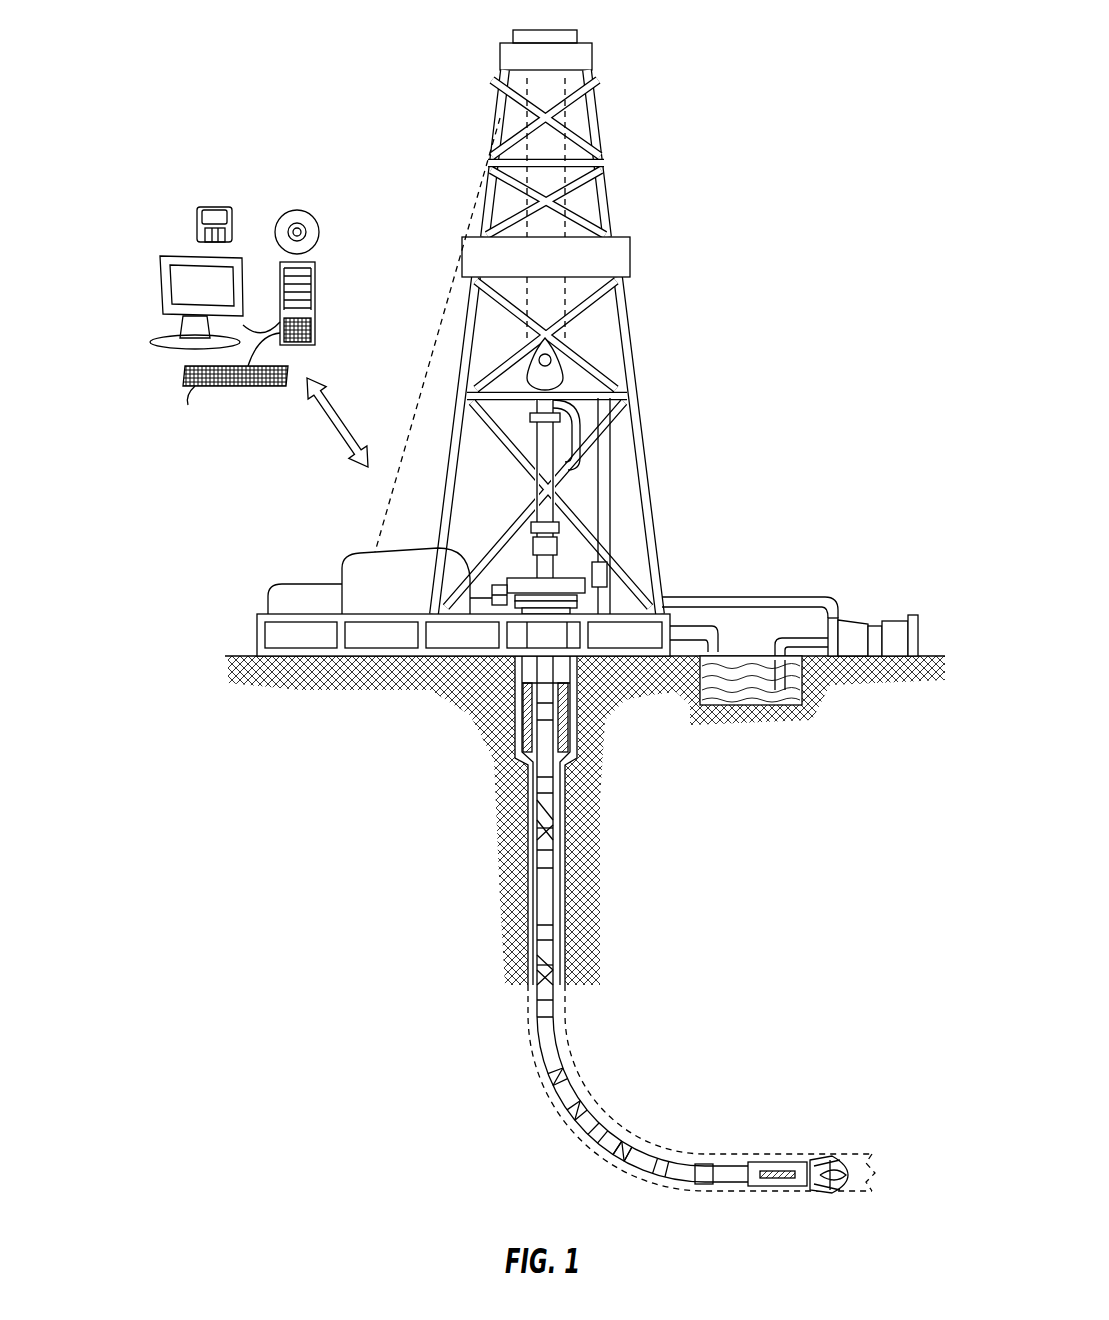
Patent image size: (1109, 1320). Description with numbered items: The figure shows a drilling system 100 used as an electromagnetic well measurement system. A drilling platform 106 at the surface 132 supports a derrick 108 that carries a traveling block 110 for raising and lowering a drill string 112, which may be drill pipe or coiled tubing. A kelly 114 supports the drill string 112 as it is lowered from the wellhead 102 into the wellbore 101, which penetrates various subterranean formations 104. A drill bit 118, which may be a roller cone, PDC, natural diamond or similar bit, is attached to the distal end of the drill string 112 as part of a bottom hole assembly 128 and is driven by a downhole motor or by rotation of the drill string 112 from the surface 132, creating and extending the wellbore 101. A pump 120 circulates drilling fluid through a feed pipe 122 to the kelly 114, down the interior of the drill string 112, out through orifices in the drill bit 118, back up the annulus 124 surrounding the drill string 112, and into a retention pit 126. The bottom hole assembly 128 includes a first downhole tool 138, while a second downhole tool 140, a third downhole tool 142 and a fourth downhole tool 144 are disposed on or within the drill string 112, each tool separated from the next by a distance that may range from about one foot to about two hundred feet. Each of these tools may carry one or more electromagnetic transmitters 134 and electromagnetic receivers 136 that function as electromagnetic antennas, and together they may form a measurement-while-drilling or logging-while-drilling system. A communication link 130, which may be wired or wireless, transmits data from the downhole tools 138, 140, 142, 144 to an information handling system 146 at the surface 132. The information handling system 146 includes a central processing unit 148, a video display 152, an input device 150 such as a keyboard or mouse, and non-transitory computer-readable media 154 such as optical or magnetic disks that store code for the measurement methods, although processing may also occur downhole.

The drilling system 100 is at (852, 135).
The wellbore 101 is at (572, 1012).
The wellhead 102 is at (584, 603).
The subterranean formations 104 is at (781, 944).
The drilling platform 106 is at (257, 640).
The derrick 108 is at (605, 180).
The traveling block 110 is at (565, 365).
The drill string 112 is at (560, 840).
The kelly 114 is at (548, 440).
The drill bit 118 is at (838, 1160).
The pump 120 is at (848, 615).
The feed pipe 122 is at (778, 597).
The annulus 124 is at (532, 855).
The retention pit 126 is at (745, 690).
The bottom hole assembly 128 is at (745, 1165).
The communication link 130 is at (330, 428).
The surface 132 is at (930, 656).
The electromagnetic transmitter 134 is at (545, 820).
The electromagnetic receiver 136 is at (548, 832).
The first downhole tool 138 is at (775, 1178).
The second downhole tool 140 is at (615, 1110).
The third downhole tool 142 is at (548, 970).
The fourth downhole tool 144 is at (540, 830).
The information handling system 146 is at (165, 202).
The central processing unit 148 is at (315, 275).
The input device 150 is at (192, 392).
The video display 152 is at (160, 292).
The non-transitory computer-readable media 154 is at (297, 210).